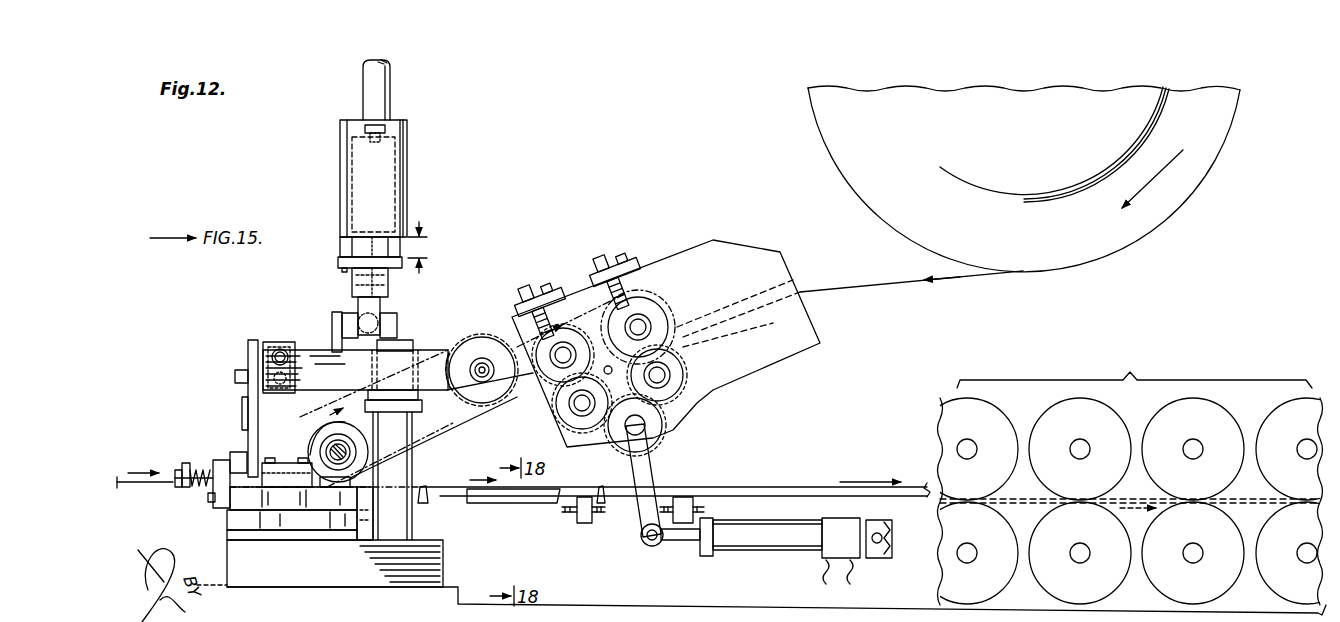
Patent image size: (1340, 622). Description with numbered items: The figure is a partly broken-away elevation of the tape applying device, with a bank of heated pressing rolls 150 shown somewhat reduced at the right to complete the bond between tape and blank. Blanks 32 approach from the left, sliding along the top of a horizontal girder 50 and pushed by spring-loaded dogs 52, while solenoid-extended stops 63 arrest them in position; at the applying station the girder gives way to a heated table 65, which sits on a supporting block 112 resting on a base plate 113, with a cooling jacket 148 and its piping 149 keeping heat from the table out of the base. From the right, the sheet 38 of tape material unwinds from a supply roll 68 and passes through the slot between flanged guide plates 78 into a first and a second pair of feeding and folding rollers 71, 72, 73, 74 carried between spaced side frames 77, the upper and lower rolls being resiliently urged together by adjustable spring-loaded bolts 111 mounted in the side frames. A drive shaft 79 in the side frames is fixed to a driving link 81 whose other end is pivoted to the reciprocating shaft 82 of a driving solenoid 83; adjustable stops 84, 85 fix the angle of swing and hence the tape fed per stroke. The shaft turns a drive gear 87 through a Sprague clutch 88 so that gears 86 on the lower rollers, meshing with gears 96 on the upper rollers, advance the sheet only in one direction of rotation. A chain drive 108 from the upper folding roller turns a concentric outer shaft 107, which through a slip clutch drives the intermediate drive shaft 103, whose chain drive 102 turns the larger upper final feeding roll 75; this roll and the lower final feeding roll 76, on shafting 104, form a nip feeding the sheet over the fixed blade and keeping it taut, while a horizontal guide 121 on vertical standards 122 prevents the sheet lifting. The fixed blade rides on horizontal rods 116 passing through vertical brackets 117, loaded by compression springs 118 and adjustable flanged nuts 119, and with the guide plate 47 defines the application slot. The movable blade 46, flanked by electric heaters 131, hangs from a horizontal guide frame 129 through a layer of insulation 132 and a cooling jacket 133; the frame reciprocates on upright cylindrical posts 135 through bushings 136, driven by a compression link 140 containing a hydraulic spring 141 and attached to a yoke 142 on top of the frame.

The blank 32 is at (1168, 477).
The sheet of tape material 38 is at (990, 273).
The movable blade 46 is at (248, 356).
The guide plate 47 is at (240, 447).
The horizontal girder 50 is at (557, 503).
The dogs 52 is at (421, 493).
The stops 63 is at (365, 475).
The table 65 is at (240, 507).
The supply roll 68 is at (1213, 137).
The upper feeding and folding roller of the first pair 71 is at (653, 293).
The lower feeding and folding roller of the first pair 72 is at (677, 374).
The upper feeding and folding roller of the second pair 73 is at (587, 327).
The lower feeding and folding roller of the second pair 74 is at (553, 417).
The upper final feeding roll 75 is at (330, 440).
The lower final feeding roll 76 is at (333, 484).
The side frames 77 is at (727, 250).
The guide plates 78 is at (748, 297).
The drive shaft 79 is at (662, 432).
The driving link 81 is at (655, 463).
The reciprocating shaft 82 is at (699, 556).
The driving solenoid 83 is at (773, 537).
The adjustable stop 84 is at (600, 510).
The adjustable stop 85 is at (680, 549).
The gears 86 is at (570, 430).
The drive gear 87 is at (607, 434).
The Sprague clutch 88 is at (627, 445).
The gears 96 is at (520, 370).
The chain drive 102 is at (357, 375).
The intermediate drive shaft 103 is at (475, 347).
The shafting 104 is at (358, 450).
The concentric outer shaft 107 is at (483, 360).
The chain drive 108 is at (587, 282).
The adjusting bolts 111 is at (572, 290).
The supporting block 112 is at (240, 525).
The base plate 113 is at (443, 545).
The horizontal rods 116 is at (258, 485).
The vertical brackets 117 is at (216, 507).
The compression springs 118 is at (198, 465).
The adjustable flanged nuts 119 is at (177, 487).
The horizontal guide 121 is at (292, 464).
The vertical standards 122 is at (288, 475).
The horizontal guide frame 129 is at (312, 350).
The electric heaters 131 is at (243, 402).
The layer of insulation 132 is at (252, 345).
The cooling jacket 133 is at (283, 342).
The upright cylindrical posts 135 is at (400, 340).
The bushings 136 is at (420, 402).
The compression link 140 is at (392, 73).
The hydraulic spring 141 is at (408, 166).
The yoke 142 is at (395, 306).
The cooling jacket 148 is at (303, 522).
The piping 149 is at (380, 520).
The heated pressing rolls 150 is at (945, 421).